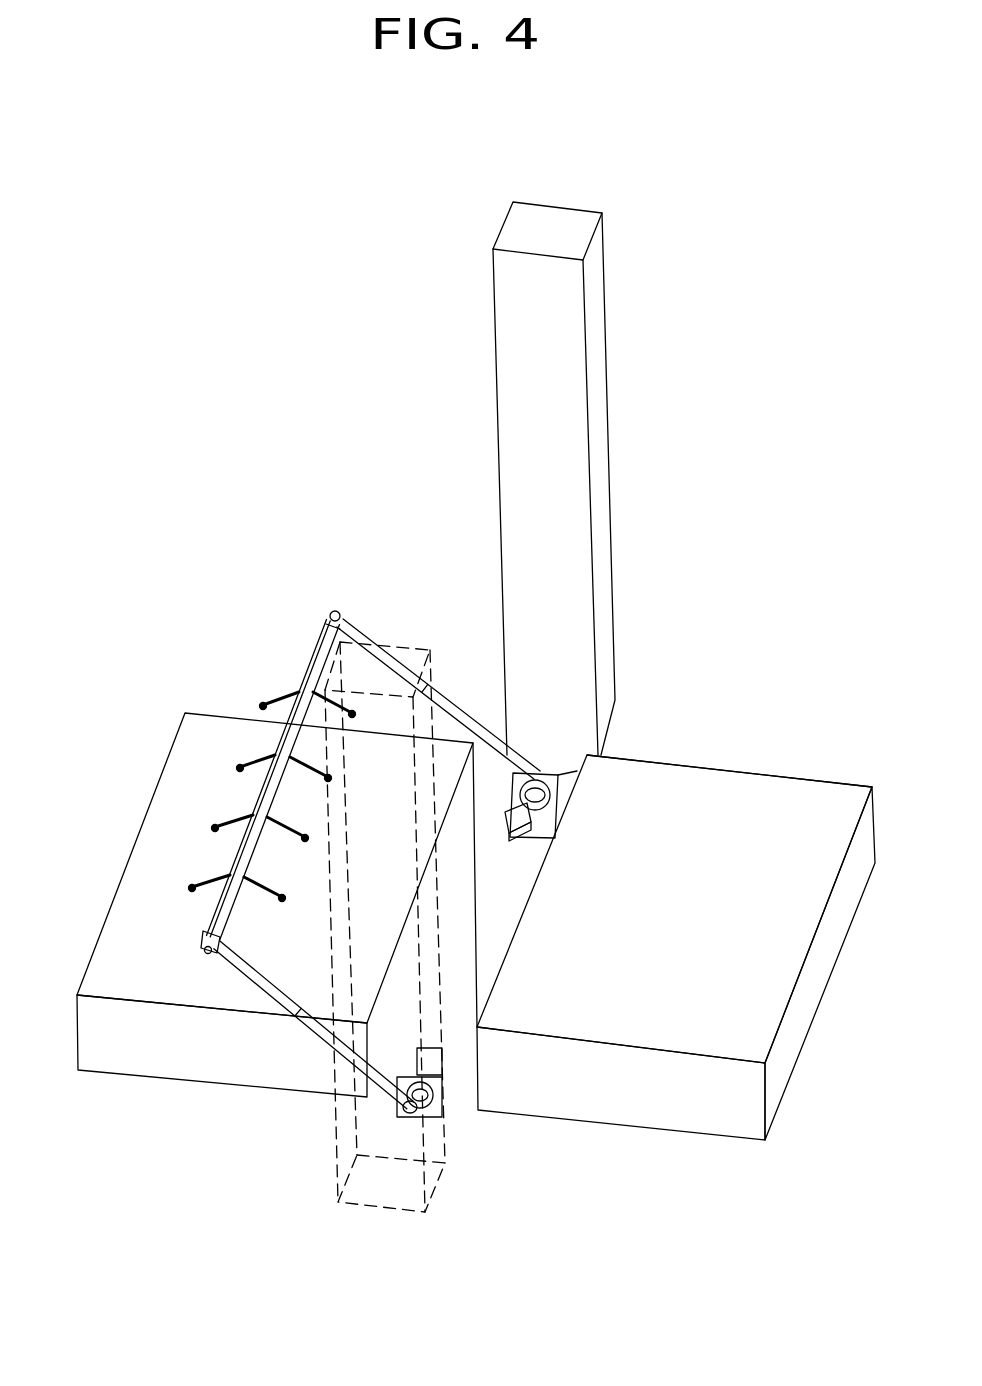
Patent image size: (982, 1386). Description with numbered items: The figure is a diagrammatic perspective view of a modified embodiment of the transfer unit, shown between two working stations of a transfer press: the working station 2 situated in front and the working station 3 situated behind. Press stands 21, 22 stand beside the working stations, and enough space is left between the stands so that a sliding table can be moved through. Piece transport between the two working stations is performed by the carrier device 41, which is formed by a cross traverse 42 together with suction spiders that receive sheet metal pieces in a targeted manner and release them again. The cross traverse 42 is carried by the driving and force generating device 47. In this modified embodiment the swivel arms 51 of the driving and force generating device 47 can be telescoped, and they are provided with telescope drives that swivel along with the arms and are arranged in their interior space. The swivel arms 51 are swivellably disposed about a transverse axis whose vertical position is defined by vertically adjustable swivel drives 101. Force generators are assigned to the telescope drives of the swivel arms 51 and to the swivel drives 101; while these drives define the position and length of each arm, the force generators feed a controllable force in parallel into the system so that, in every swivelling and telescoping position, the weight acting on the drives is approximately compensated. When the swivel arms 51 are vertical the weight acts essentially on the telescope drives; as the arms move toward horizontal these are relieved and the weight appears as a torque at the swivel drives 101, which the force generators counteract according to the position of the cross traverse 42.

The working station 2 is at (188, 797).
The working station 3 is at (681, 891).
The press stand 21 is at (562, 551).
The press stand 22 is at (394, 907).
The carrier device 41 is at (228, 690).
The cross traverse 42 is at (318, 648).
The driving and force generating device 47 is at (598, 831).
The swivel arm 51 is at (462, 713).
The swivel drive 101 is at (503, 870).